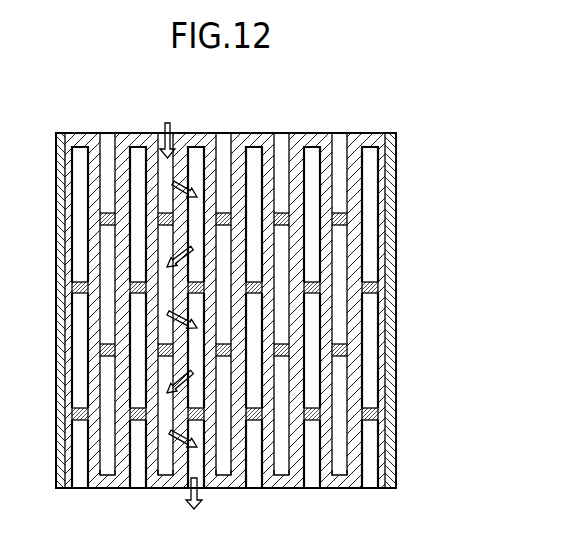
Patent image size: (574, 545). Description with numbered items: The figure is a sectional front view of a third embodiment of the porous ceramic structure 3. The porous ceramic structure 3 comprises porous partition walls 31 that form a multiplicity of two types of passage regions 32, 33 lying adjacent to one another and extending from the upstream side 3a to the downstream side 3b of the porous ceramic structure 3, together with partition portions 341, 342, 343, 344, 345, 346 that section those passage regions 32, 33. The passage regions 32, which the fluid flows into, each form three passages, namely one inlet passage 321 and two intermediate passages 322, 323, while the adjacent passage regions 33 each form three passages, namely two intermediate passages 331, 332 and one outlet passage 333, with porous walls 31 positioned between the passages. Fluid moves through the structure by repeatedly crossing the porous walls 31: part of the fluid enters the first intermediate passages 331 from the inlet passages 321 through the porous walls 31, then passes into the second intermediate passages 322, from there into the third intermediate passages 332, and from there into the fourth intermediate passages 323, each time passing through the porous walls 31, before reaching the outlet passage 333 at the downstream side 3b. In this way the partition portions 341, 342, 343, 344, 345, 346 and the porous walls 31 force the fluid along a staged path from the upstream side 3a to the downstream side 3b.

The porous ceramic structure 3 is at (233, 307).
The upstream side 3a is at (78, 133).
The downstream side 3b is at (81, 488).
The porous partition walls 31 is at (352, 185).
The passage regions 32 is at (265, 280).
The passage regions 33 is at (294, 296).
The inlet passage 321 is at (390, 141).
The second intermediate passage 322 is at (372, 335).
The fourth intermediate passage 323 is at (372, 440).
The first intermediate passage 331 is at (313, 203).
The third intermediate passage 332 is at (345, 380).
The outlet passage 333 is at (376, 486).
The partition portion 341 is at (340, 278).
The partition portion 342 is at (345, 372).
The partition portion 343 is at (288, 489).
The partition portion 344 is at (323, 140).
The partition portion 345 is at (372, 308).
The partition portion 346 is at (378, 416).